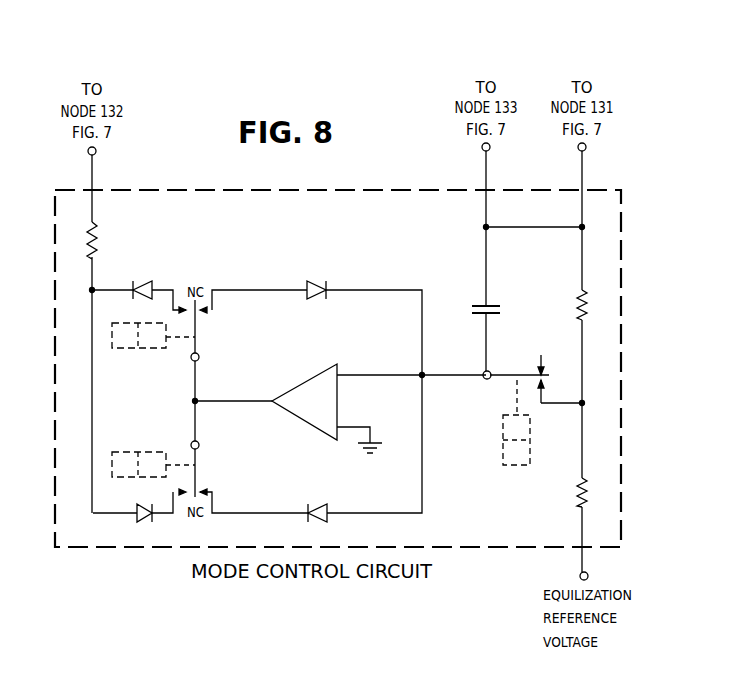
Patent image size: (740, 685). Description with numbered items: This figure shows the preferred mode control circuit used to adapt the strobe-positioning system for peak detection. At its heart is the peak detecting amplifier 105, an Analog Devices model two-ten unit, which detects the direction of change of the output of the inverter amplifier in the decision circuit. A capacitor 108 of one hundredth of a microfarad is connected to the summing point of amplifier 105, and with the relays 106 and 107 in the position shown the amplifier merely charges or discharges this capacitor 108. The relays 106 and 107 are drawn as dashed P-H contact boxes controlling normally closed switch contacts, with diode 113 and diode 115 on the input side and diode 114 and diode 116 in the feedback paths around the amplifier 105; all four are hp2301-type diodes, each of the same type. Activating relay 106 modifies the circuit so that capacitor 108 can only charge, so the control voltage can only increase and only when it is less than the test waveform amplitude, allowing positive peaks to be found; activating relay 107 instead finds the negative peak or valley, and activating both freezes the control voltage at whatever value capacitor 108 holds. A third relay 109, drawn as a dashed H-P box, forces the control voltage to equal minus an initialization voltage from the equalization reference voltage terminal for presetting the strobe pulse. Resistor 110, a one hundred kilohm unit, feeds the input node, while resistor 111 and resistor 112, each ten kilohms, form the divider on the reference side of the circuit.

The peak detecting amplifier 105 is at (302, 414).
The relay 106 is at (128, 323).
The relay 107 is at (120, 452).
The capacitor 108 is at (484, 303).
The relay 109 is at (503, 450).
The resistor 110 is at (98, 240).
The resistor 111 is at (578, 302).
The resistor 112 is at (579, 480).
The diode 113 is at (148, 282).
The diode 114 is at (311, 276).
The diode 115 is at (147, 520).
The diode 116 is at (316, 520).